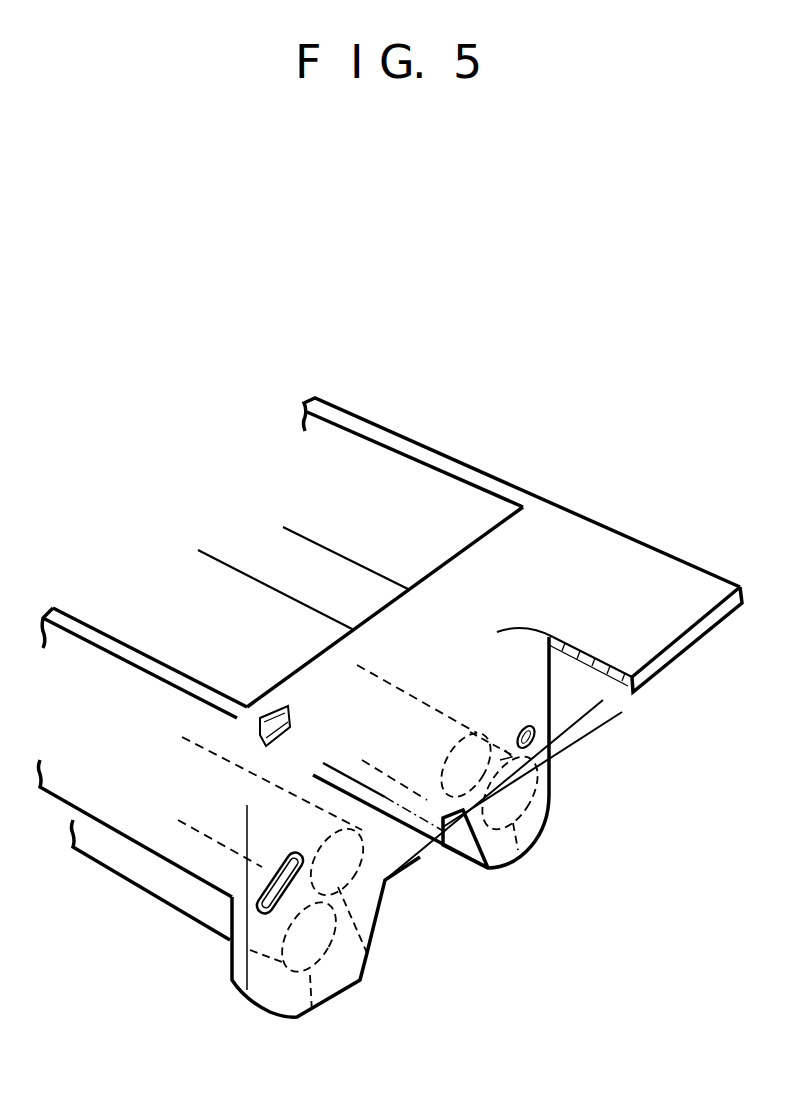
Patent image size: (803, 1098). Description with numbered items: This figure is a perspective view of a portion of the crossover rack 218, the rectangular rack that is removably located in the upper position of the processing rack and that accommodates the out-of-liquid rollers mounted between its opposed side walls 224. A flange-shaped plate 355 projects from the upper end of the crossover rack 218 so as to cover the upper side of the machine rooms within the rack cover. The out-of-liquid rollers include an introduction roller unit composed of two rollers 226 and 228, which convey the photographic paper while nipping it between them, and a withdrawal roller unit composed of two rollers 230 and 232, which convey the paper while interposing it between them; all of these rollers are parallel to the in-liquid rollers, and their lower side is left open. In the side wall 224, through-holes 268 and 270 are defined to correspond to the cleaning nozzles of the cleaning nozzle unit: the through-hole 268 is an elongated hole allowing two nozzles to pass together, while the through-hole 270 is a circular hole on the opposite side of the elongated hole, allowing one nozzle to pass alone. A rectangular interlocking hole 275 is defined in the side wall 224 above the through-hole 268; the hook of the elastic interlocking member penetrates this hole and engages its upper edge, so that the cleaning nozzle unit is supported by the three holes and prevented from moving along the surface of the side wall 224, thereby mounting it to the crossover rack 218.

The crossover rack 218 is at (452, 458).
The flange-shaped plate 355 is at (620, 547).
The interlocking hole 275 is at (283, 740).
The side wall 224 is at (278, 815).
The through-hole 268 is at (262, 872).
The roller 230 is at (367, 953).
The roller 232 is at (312, 1013).
The roller 228 is at (518, 850).
The roller 226 is at (417, 835).
The through-hole 270 is at (550, 763).